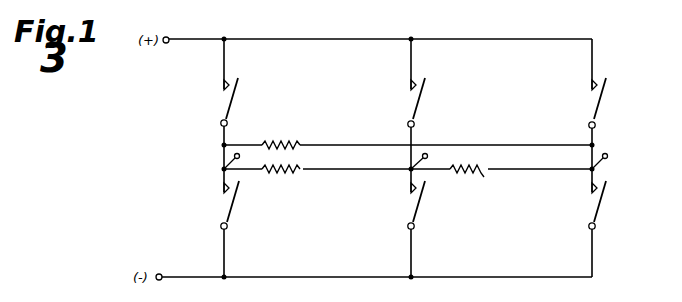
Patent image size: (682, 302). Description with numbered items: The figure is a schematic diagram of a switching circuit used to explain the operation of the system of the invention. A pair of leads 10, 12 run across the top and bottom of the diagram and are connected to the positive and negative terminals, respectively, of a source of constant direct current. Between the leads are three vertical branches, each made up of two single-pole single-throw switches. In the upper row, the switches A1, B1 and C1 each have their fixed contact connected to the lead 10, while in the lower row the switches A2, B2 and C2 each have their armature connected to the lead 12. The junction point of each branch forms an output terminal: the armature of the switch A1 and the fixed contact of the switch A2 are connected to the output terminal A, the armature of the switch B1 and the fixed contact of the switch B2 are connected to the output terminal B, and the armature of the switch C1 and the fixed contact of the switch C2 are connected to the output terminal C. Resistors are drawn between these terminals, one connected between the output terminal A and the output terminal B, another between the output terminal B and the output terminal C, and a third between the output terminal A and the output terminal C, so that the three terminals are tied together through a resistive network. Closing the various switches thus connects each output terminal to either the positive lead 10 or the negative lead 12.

The lead 10 is at (187, 39).
The lead 12 is at (195, 276).
The single-pole single-throw switch A1 is at (224, 104).
The single-pole single-throw switch A2 is at (224, 212).
The single-pole single-throw switch B1 is at (411, 105).
The single-pole single-throw switch B2 is at (411, 212).
The single-pole single-throw switch C1 is at (592, 105).
The single-pole single-throw switch C2 is at (592, 212).
The output terminal A is at (237, 158).
The output terminal B is at (425, 158).
The output terminal C is at (606, 158).